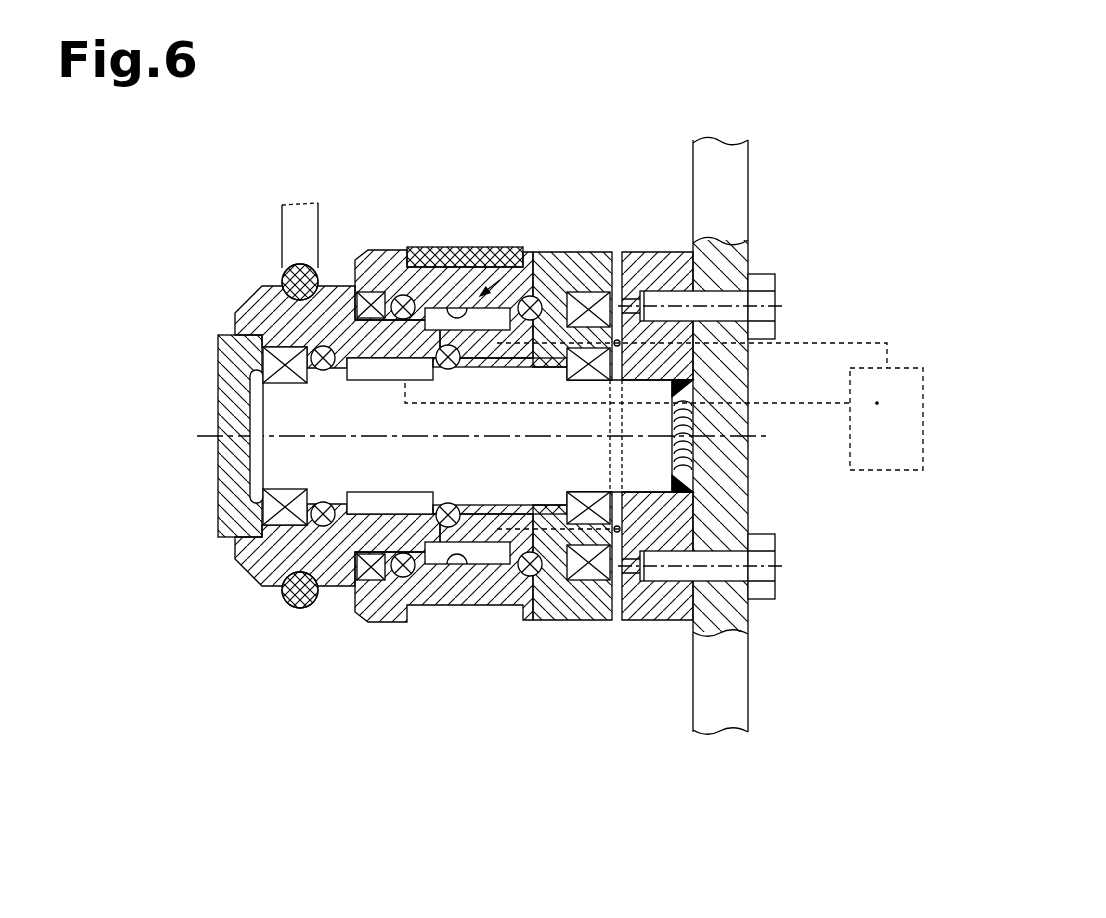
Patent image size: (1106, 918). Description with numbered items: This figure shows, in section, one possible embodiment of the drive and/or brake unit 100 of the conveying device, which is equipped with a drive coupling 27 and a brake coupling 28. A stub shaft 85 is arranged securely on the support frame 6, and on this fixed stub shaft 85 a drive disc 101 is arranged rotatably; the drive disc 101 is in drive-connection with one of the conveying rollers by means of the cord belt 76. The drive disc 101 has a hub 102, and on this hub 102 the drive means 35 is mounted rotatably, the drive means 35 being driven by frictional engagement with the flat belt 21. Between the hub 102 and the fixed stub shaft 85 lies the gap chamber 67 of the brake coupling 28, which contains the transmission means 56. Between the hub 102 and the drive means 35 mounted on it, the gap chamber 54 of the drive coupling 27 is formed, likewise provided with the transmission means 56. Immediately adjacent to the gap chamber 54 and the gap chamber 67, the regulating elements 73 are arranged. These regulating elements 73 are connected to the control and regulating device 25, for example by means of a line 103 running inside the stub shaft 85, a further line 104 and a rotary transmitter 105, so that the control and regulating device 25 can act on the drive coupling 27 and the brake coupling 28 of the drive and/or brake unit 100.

The support frame 6 is at (735, 178).
The flat belt 21 is at (432, 250).
The control and regulating device 25 is at (945, 398).
The drive coupling 27 is at (482, 245).
The brake coupling 28 is at (348, 542).
The drive means 35 is at (563, 250).
The gap chamber 54 is at (383, 245).
The transmission means 56 is at (527, 295).
The gap chamber 67 is at (397, 512).
The regulating elements 73 is at (368, 383).
The cord belt 76 is at (287, 220).
The stub shaft 85 is at (278, 424).
The drive and/or brake unit 100 is at (225, 684).
The drive disc 101 is at (263, 308).
The hub 102 is at (485, 530).
The line 103 is at (812, 403).
The line 104 is at (857, 343).
The rotary transmitter 105 is at (617, 248).